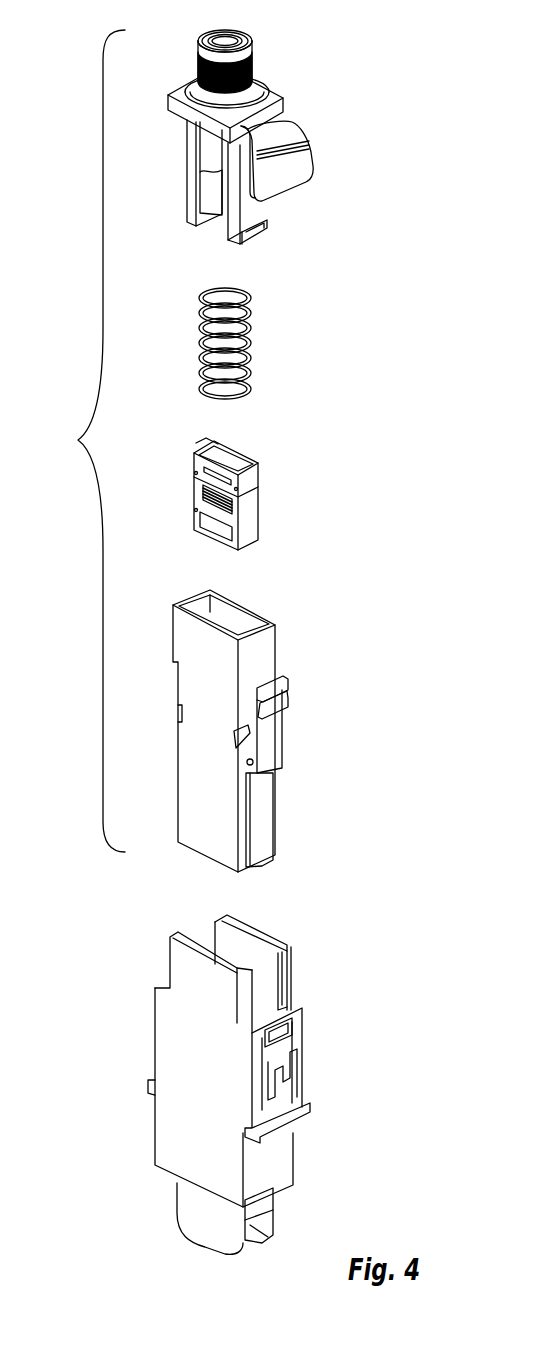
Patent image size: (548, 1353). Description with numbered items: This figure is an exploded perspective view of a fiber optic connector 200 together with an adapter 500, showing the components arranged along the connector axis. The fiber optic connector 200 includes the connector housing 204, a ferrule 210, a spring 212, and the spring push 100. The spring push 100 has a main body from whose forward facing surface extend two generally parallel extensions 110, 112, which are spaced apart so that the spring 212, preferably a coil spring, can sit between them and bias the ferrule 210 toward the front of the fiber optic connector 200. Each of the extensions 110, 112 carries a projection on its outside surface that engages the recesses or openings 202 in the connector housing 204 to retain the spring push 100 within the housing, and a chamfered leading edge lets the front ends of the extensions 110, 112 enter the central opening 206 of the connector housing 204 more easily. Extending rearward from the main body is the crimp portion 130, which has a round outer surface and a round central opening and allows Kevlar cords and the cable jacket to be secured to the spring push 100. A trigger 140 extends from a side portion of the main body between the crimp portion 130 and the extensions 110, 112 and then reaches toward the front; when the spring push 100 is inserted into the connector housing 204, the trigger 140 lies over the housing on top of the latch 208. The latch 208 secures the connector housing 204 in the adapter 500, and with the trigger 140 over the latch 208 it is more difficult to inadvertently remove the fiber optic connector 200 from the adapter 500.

The spring push 100 is at (251, 122).
The generally parallel extension 110 is at (185, 188).
The generally parallel extension 112 is at (267, 214).
The crimp portion 130 is at (188, 50).
The trigger 140 is at (317, 170).
The fiber optic connector 200 is at (90, 441).
The recesses or openings 202 is at (236, 730).
The connector housing 204 is at (193, 817).
The central opening 206 is at (240, 626).
The latch 208 is at (288, 706).
The ferrule 210 is at (258, 512).
The spring 212 is at (252, 352).
The adapter 500 is at (364, 993).